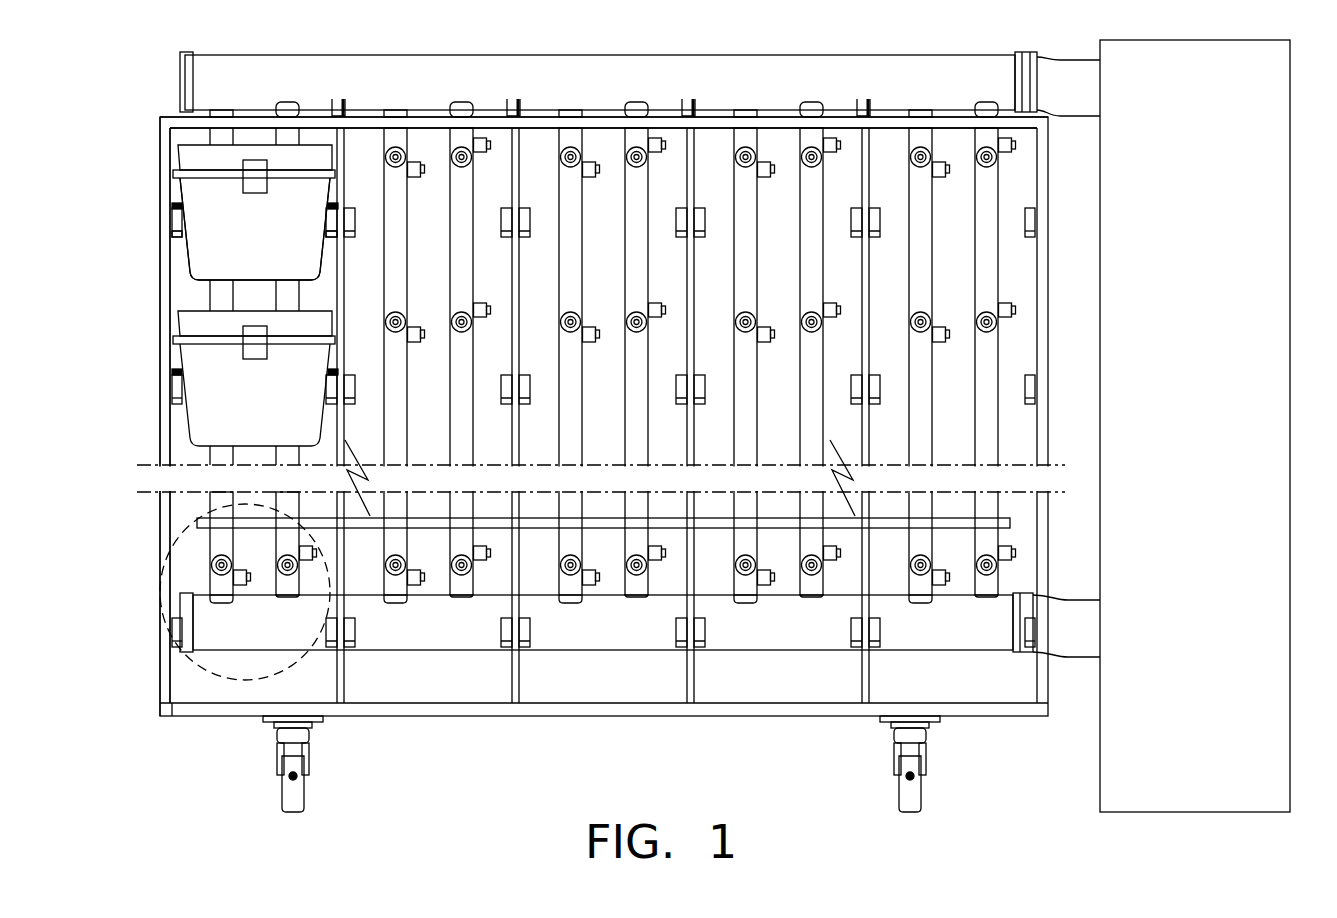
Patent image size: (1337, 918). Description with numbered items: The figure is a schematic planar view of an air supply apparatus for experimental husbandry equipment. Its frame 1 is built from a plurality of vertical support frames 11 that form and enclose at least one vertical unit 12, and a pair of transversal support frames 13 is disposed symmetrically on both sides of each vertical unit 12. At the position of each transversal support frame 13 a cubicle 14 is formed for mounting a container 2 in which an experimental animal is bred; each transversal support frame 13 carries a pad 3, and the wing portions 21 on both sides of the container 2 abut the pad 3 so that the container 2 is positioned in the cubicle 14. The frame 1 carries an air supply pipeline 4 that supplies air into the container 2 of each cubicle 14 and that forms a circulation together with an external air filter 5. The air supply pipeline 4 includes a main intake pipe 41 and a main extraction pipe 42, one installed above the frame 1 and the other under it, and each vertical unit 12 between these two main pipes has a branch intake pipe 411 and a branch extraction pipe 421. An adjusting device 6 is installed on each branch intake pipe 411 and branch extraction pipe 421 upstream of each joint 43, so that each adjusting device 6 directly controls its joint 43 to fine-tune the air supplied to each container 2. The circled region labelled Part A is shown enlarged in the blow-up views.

The frame 1 is at (957, 718).
The container 2 is at (190, 260).
The pad 3 is at (170, 218).
The air supply pipeline 4 is at (975, 53).
The external air filter 5 is at (1285, 115).
The adjusting device 6 is at (235, 582).
The vertical support frame 11 is at (160, 125).
The vertical unit 12 is at (255, 140).
The transversal support frame 13 is at (172, 238).
The cubicle 14 is at (232, 208).
The wing portion 21 is at (178, 205).
The main intake pipe 41 is at (545, 57).
The main extraction pipe 42 is at (603, 640).
The joint 43 is at (285, 545).
The branch intake pipe 411 is at (297, 138).
The branch extraction pipe 421 is at (213, 138).
The Part A is at (165, 670).